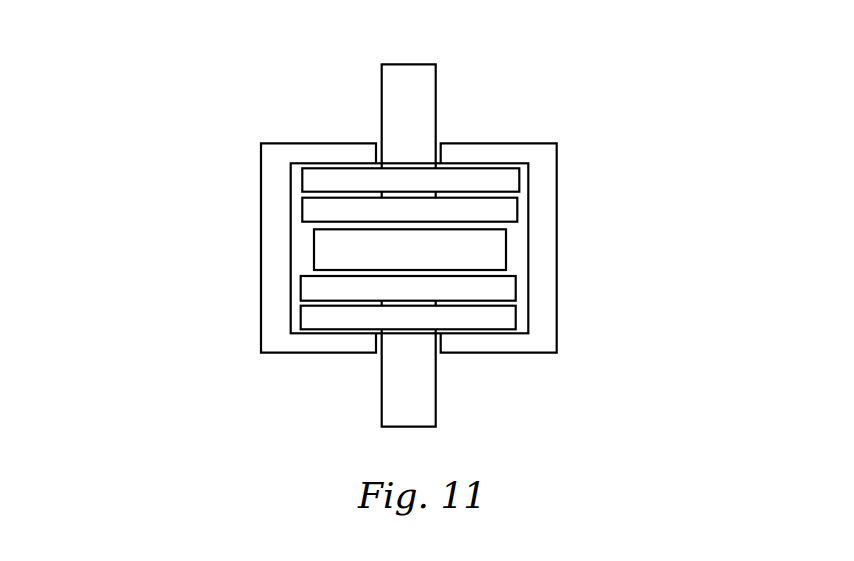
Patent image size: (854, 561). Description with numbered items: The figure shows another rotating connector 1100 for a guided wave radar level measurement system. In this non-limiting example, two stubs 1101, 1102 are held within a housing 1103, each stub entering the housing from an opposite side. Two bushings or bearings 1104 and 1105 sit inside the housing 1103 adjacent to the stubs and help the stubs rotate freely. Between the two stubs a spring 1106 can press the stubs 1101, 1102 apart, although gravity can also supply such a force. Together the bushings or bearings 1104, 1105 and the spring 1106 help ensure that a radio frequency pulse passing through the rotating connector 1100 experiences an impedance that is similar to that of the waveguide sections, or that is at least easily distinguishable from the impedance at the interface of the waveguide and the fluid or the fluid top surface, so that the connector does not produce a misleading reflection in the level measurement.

The rotating connector 1100 is at (146, 84).
The stub 1101 is at (404, 82).
The stub 1102 is at (398, 415).
The housing 1103 is at (540, 263).
The bushing or bearing 1104 is at (493, 183).
The bushing or bearing 1105 is at (500, 321).
The spring 1106 is at (330, 253).